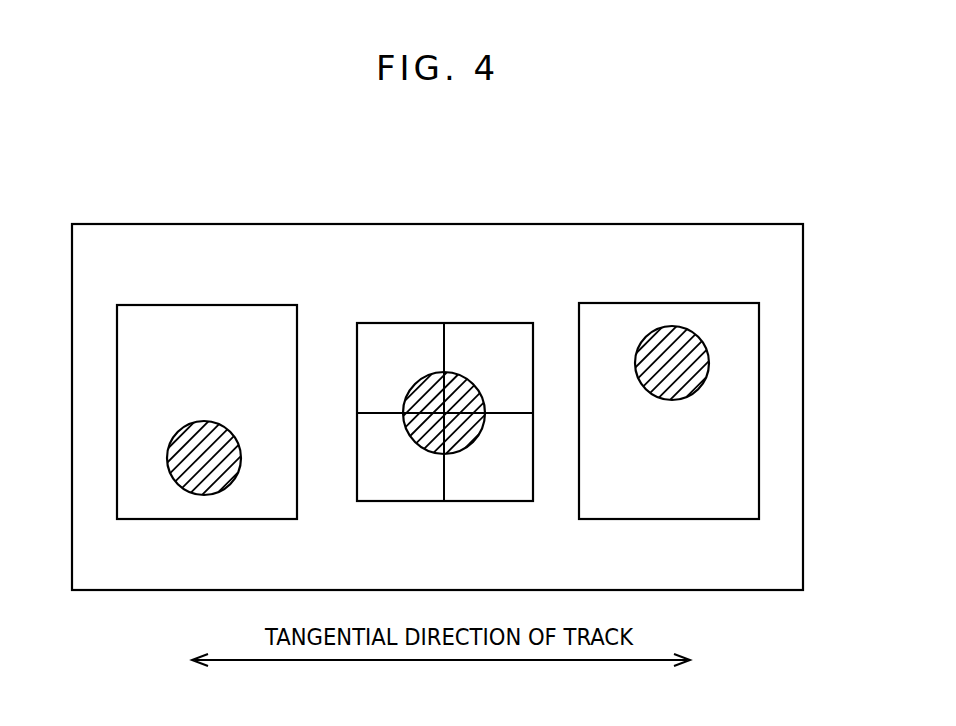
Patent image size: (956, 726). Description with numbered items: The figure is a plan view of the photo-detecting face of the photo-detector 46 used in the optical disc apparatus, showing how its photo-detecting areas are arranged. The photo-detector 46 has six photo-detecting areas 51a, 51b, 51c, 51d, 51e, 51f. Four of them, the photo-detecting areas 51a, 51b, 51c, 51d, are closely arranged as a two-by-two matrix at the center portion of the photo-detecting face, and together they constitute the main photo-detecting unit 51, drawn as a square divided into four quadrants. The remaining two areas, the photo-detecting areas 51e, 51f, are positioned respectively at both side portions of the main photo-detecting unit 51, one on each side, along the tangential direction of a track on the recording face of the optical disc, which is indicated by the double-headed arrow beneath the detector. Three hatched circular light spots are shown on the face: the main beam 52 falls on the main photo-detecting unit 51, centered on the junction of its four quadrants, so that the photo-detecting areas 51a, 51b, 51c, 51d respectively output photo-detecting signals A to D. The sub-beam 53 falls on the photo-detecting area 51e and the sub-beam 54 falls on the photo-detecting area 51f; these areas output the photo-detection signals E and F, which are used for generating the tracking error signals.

The photo-detector 46 is at (461, 166).
The main photo-detecting unit 51 is at (445, 442).
The photo-detecting area 51a is at (488, 368).
The photo-detecting area 51b is at (488, 457).
The photo-detecting area 51c is at (400, 457).
The photo-detecting area 51d is at (400, 368).
The photo-detecting area 51e is at (669, 411).
The photo-detecting area 51f is at (207, 412).
The main beam 52 is at (430, 457).
The sub-beam 53 is at (665, 324).
The sub-beam 54 is at (190, 495).